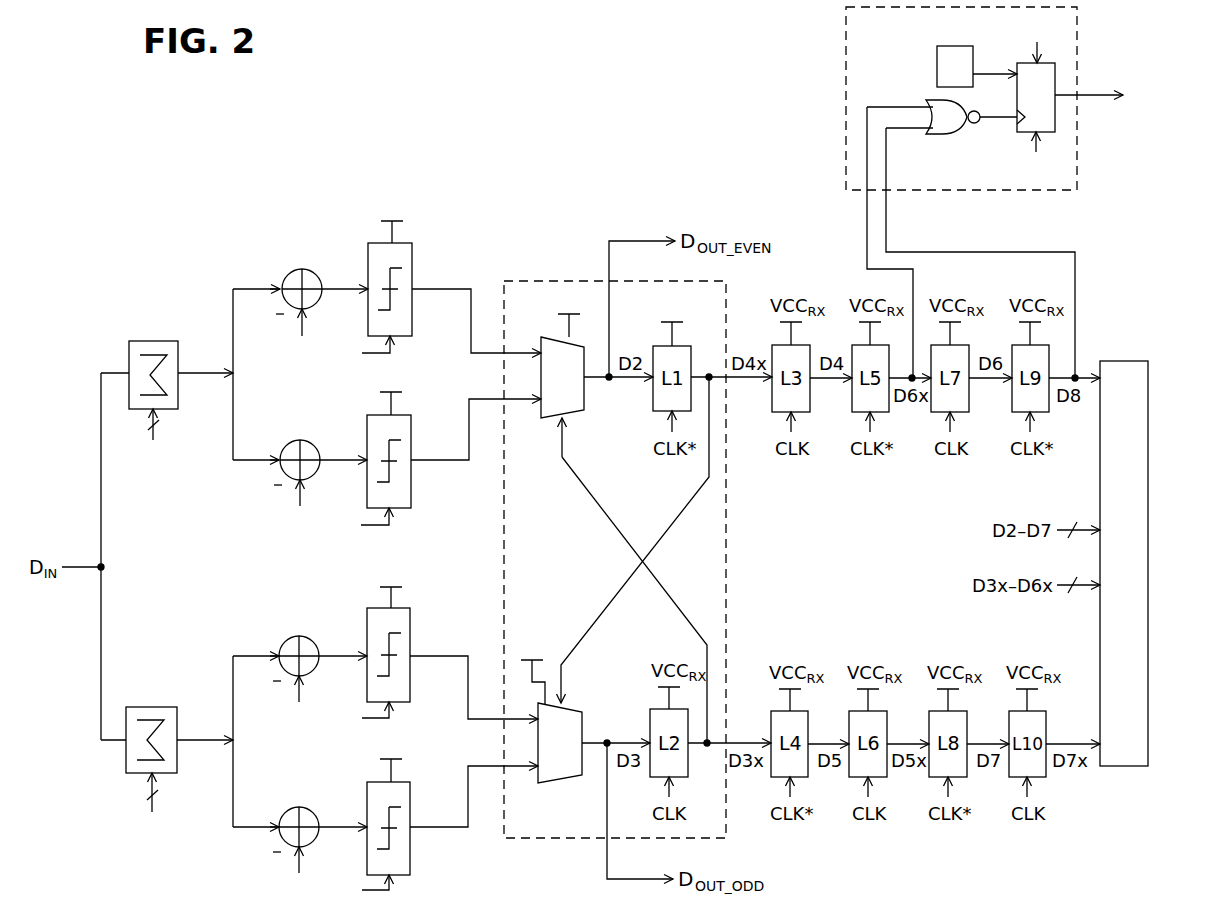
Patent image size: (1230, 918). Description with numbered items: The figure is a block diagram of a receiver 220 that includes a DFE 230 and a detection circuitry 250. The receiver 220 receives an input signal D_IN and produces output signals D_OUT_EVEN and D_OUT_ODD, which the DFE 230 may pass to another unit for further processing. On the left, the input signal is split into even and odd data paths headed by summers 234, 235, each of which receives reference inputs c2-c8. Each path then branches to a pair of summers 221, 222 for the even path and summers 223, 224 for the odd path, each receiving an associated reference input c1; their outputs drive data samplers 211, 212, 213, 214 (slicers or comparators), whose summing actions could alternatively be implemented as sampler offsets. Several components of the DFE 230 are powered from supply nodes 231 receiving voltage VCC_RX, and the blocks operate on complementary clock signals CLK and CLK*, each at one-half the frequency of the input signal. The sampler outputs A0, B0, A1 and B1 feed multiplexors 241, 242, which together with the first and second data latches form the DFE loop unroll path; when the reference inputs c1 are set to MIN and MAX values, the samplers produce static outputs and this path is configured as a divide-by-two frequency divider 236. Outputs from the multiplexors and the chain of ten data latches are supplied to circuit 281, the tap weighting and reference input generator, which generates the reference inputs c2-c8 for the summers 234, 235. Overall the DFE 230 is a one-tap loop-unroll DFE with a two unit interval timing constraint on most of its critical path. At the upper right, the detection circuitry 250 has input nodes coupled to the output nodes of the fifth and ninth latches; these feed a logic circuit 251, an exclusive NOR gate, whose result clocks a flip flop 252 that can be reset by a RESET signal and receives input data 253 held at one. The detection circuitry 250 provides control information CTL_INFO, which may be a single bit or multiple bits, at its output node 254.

The receiver 220 is at (194, 77).
The DFE 230 is at (466, 146).
The summer 234 is at (150, 341).
The summer 235 is at (150, 707).
The summer 221 is at (290, 276).
The summer 222 is at (288, 447).
The summer 223 is at (287, 642).
The summer 224 is at (287, 814).
The data sampler 211 is at (368, 266).
The data sampler 212 is at (367, 438).
The data sampler 213 is at (367, 630).
The data sampler 214 is at (367, 803).
The supply node 231 is at (385, 232).
The frequency divider 236 is at (521, 281).
The multiplexor 241 is at (576, 413).
The multiplexor 242 is at (582, 690).
The detection circuitry 250 is at (1003, 192).
The logic circuit 251 is at (950, 135).
The flip flop 252 is at (1017, 131).
The input data 253 is at (955, 46).
The output node 254 is at (1103, 96).
The circuit 281 is at (1123, 361).